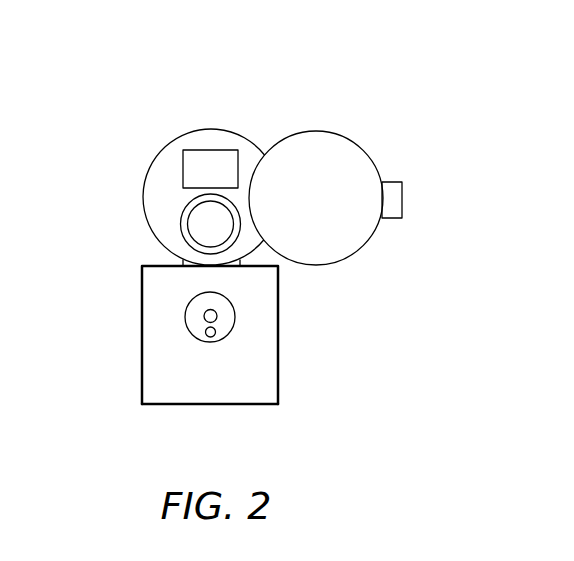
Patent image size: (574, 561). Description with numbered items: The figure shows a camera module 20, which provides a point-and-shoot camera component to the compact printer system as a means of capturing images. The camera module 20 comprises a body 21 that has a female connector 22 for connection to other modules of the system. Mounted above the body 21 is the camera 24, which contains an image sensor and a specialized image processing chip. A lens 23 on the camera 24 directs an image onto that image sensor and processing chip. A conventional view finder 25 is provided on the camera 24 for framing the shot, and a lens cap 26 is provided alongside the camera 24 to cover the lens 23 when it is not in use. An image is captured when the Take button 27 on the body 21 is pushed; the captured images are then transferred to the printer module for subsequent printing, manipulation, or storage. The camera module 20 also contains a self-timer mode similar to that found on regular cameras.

The camera module 20 is at (292, 97).
The body 21 is at (263, 387).
The female connector 22 is at (175, 403).
The lens 23 is at (200, 222).
The camera 24 is at (158, 176).
The view finder 25 is at (208, 160).
The lens cap 26 is at (338, 157).
The Take button 27 is at (213, 315).